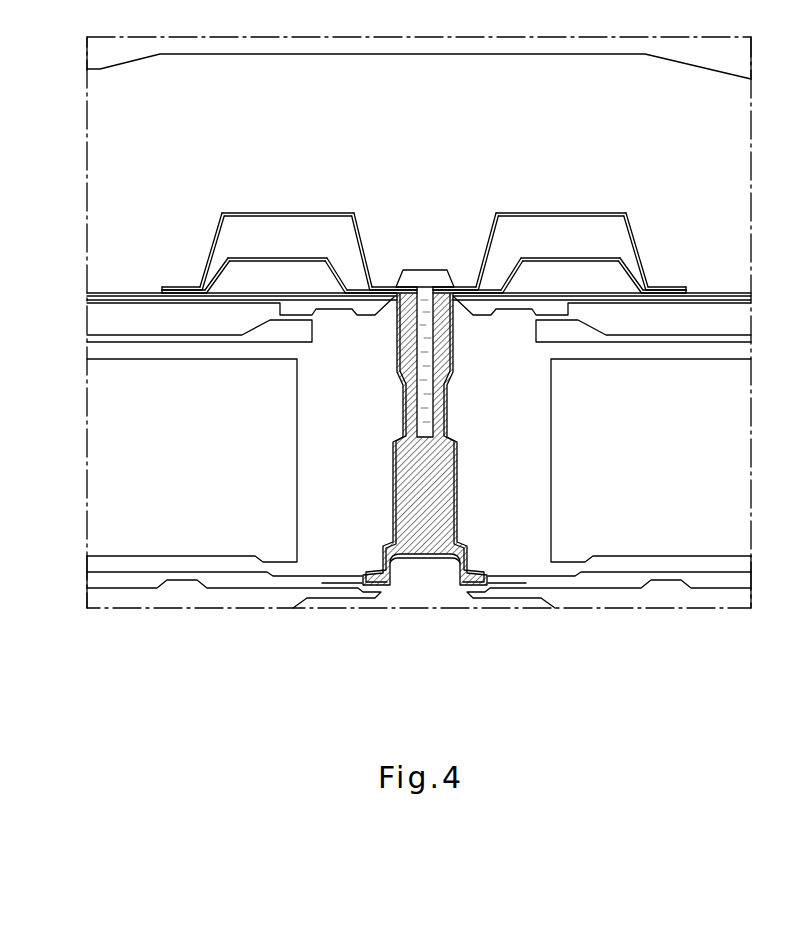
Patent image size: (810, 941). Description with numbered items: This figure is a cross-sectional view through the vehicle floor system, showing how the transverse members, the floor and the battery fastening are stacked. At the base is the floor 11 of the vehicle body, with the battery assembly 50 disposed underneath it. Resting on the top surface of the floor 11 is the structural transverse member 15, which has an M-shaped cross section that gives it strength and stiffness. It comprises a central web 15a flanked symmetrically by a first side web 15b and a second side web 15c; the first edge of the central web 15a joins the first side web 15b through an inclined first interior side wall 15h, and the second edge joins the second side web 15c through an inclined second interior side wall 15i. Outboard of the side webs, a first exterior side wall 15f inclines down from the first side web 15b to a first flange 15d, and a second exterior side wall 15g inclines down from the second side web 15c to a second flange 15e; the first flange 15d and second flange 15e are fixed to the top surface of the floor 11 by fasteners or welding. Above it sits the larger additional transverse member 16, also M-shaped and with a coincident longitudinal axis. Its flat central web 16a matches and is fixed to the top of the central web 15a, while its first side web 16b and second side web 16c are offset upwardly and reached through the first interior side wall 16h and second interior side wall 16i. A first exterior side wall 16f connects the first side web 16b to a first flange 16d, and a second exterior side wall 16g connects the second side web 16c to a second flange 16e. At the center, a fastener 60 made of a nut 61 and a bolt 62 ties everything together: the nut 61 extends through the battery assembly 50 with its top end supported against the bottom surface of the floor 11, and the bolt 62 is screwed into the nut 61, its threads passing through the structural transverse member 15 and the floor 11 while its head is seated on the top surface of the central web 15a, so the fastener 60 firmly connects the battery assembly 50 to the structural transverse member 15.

The floor 11 is at (102, 294).
The structural transverse member 15 is at (425, 227).
The central web 15a is at (468, 289).
The first side web 15b is at (268, 258).
The second side web 15c is at (583, 258).
The first flange 15d is at (180, 289).
The second flange 15e is at (670, 290).
The first exterior side wall 15f is at (220, 275).
The second exterior side wall 15g is at (632, 275).
The first interior side wall 15h is at (340, 268).
The second interior side wall 15i is at (512, 268).
The additional transverse member 16 is at (424, 209).
The central web 16a is at (410, 286).
The first side web 16b is at (276, 211).
The second side web 16c is at (577, 210).
The first flange 16d is at (190, 286).
The second flange 16e is at (662, 287).
The first exterior side wall 16f is at (217, 230).
The second exterior side wall 16g is at (637, 235).
The first interior side wall 16h is at (362, 240).
The second interior side wall 16i is at (487, 237).
The battery assembly 50 is at (233, 608).
The fastener 60 is at (577, 380).
The nut 61 is at (442, 502).
The bolt 62 is at (458, 454).